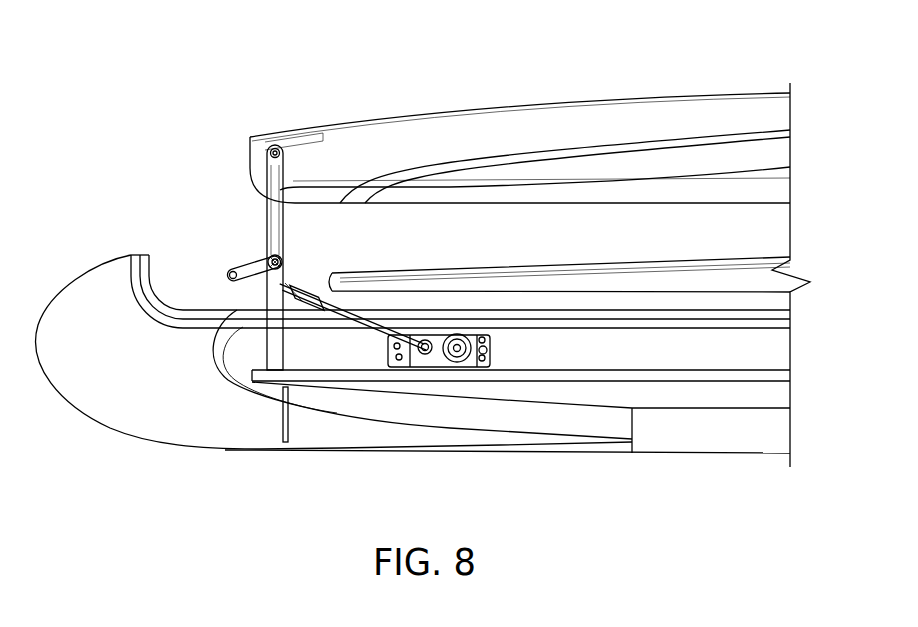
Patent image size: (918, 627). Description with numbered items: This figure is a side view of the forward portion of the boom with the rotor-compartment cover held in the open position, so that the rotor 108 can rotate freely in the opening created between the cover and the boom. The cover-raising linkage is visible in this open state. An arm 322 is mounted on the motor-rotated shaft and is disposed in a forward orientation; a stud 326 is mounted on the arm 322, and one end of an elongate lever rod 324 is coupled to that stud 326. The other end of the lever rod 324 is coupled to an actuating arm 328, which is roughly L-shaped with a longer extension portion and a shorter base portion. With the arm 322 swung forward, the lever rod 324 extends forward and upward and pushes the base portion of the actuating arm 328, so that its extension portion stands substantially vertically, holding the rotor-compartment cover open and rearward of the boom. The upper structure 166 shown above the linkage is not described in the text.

The housing 166 is at (463, 108).
The rotor 108 is at (267, 208).
The actuating arm 328 is at (267, 222).
The elongate rod 324 is at (345, 312).
The stud 326 is at (427, 354).
The arm 322 is at (441, 367).